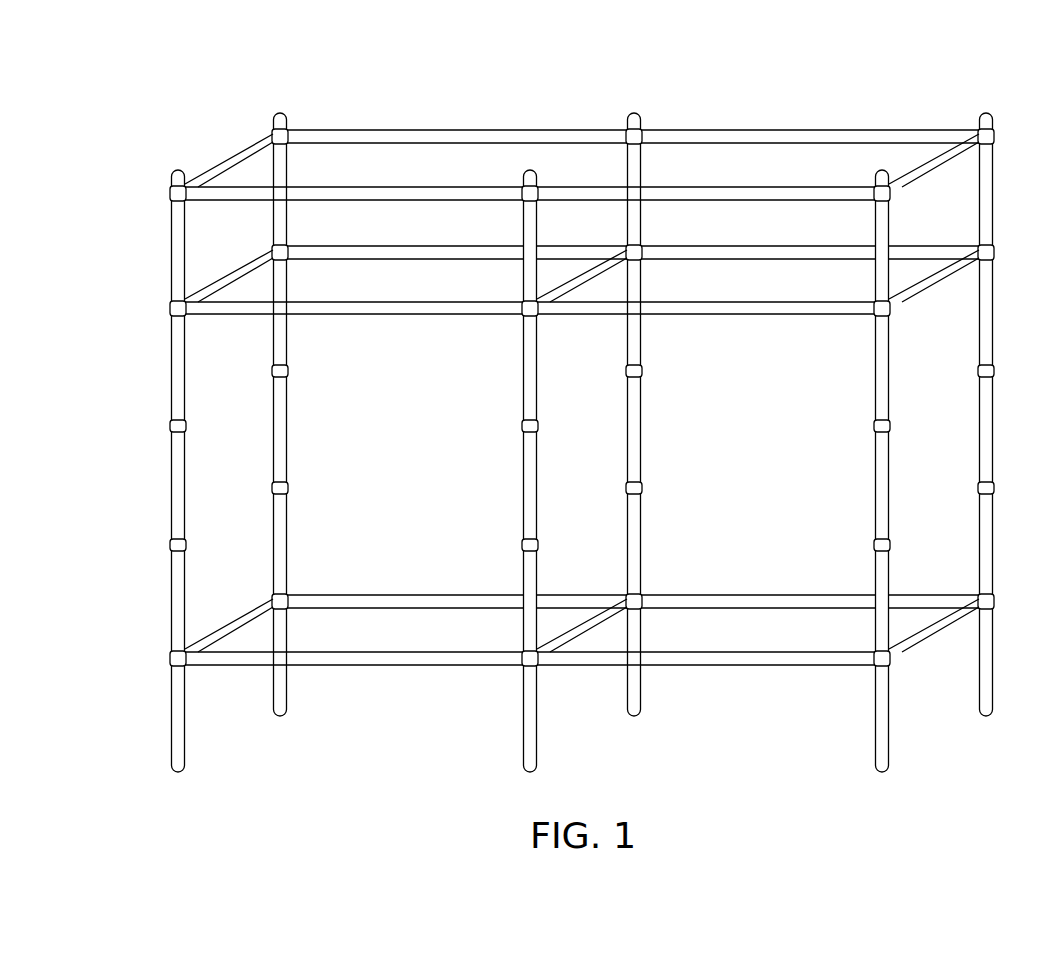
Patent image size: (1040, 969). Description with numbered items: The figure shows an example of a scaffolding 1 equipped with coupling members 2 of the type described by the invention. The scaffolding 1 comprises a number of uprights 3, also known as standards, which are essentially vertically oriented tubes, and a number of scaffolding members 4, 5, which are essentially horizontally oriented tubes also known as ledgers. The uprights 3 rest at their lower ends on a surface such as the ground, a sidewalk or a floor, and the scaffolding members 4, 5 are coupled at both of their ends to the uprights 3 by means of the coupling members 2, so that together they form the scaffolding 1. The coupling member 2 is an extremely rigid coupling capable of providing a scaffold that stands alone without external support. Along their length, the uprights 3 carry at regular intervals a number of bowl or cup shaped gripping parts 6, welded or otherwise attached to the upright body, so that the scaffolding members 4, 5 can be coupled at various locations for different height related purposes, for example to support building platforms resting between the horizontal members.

The scaffolding 1 is at (541, 423).
The coupling member 2 is at (302, 109).
The upright 3 is at (171, 361).
The scaffolding member 4 is at (402, 130).
The scaffolding member 5 is at (226, 151).
The gripping part 6 is at (170, 428).